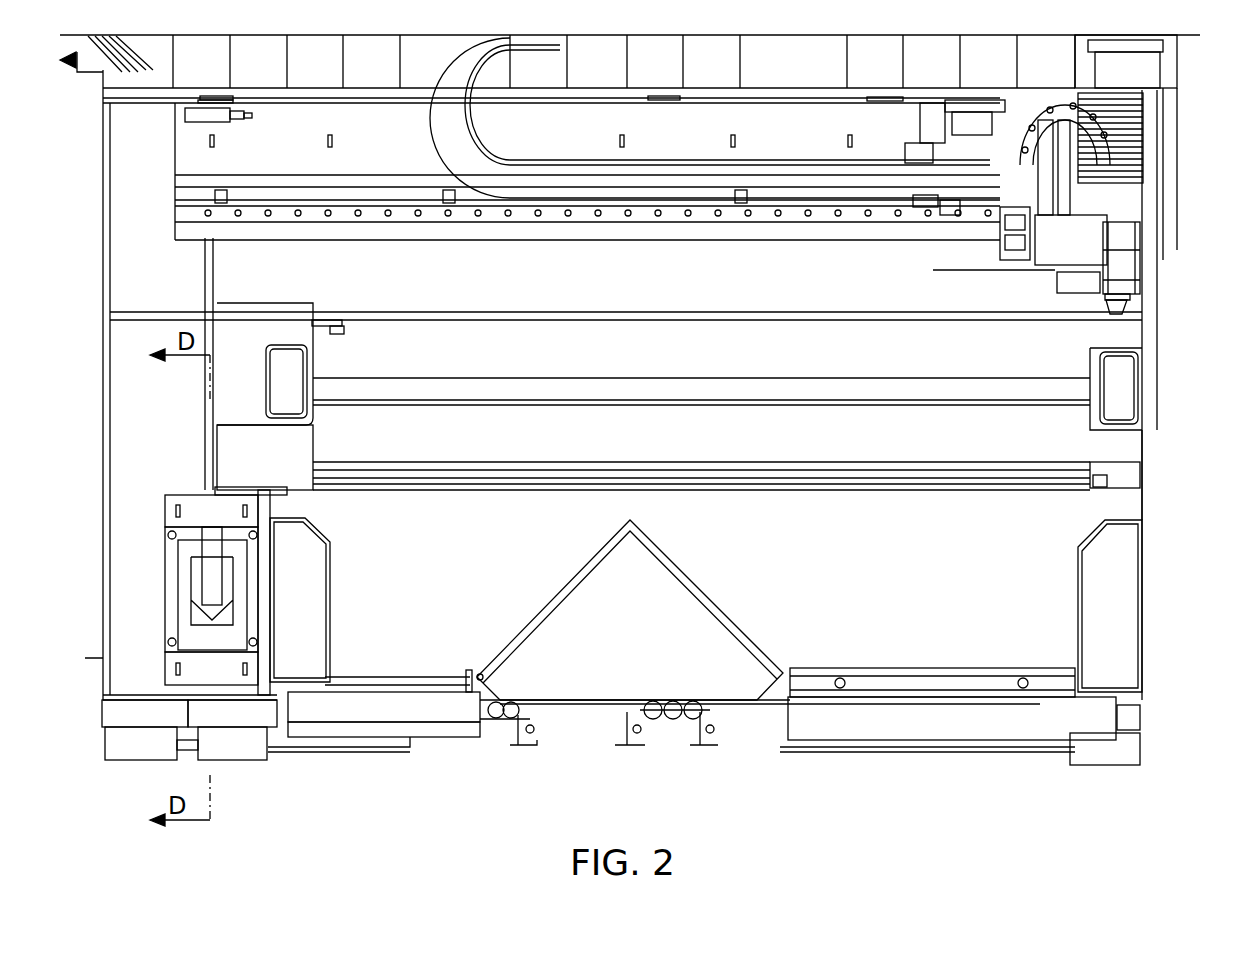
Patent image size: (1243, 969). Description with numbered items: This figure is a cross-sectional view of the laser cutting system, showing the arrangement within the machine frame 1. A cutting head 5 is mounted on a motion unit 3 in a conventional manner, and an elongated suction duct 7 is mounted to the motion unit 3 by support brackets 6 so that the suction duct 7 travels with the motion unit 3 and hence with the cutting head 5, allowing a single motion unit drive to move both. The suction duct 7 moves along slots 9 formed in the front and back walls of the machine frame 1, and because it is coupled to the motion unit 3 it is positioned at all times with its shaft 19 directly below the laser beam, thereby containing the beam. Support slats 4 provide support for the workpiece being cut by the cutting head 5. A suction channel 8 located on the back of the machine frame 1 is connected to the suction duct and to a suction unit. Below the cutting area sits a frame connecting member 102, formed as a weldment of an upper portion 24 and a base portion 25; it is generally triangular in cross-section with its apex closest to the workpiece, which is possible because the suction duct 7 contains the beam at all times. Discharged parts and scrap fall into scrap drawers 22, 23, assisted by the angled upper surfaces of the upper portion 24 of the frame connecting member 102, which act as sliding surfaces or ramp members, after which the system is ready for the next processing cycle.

The machine frame 1 is at (125, 372).
The motion unit 3 is at (195, 143).
The support slats 4 is at (1128, 312).
The cutting head 5 is at (1128, 283).
The support brackets 6 is at (212, 405).
The suction duct 7 is at (1125, 450).
The suction channel 8 is at (218, 632).
The slots 9 is at (1145, 422).
The shaft 19 is at (1108, 480).
The scrap drawer 22 is at (985, 713).
The scrap drawer 23 is at (367, 723).
The upper portion 24 is at (543, 598).
The base portion 25 is at (570, 697).
The frame connecting member 102 is at (730, 588).